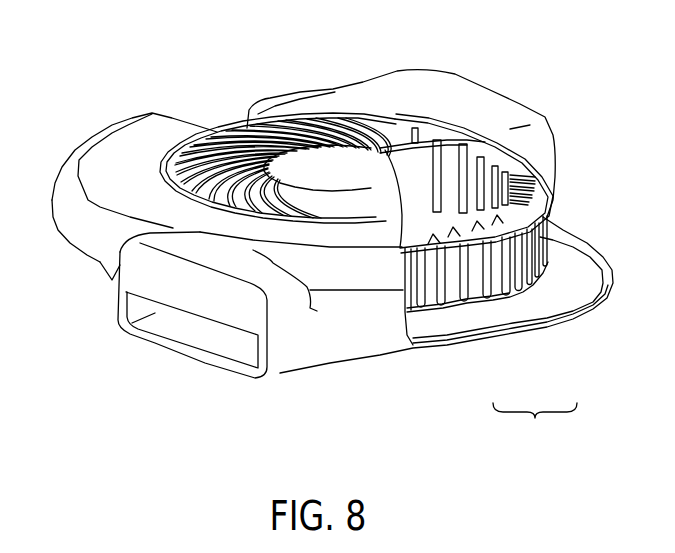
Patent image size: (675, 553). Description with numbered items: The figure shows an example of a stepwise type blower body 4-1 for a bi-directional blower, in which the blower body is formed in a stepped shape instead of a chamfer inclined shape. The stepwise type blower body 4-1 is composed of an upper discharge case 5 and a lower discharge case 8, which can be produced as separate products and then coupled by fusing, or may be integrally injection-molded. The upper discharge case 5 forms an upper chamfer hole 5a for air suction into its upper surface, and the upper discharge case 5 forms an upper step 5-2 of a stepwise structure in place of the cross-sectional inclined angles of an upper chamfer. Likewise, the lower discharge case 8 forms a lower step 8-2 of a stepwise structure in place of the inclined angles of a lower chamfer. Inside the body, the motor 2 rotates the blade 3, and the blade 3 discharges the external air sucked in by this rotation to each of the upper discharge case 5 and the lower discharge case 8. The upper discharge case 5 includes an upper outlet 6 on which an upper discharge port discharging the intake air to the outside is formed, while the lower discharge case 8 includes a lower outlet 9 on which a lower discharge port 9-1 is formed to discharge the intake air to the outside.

The motor 2 is at (393, 175).
The blade 3 is at (588, 236).
The stepwise type blower body 4-1 is at (535, 429).
The upper discharge case 5 is at (392, 272).
The upper step 5-2 is at (350, 272).
The upper chamfer hole 5a is at (228, 140).
The upper outlet 6 is at (490, 98).
The lower discharge case 8 is at (547, 300).
The lower step 8-2 is at (108, 282).
The lower outlet 9 is at (278, 343).
The lower discharge port 9-1 is at (195, 343).